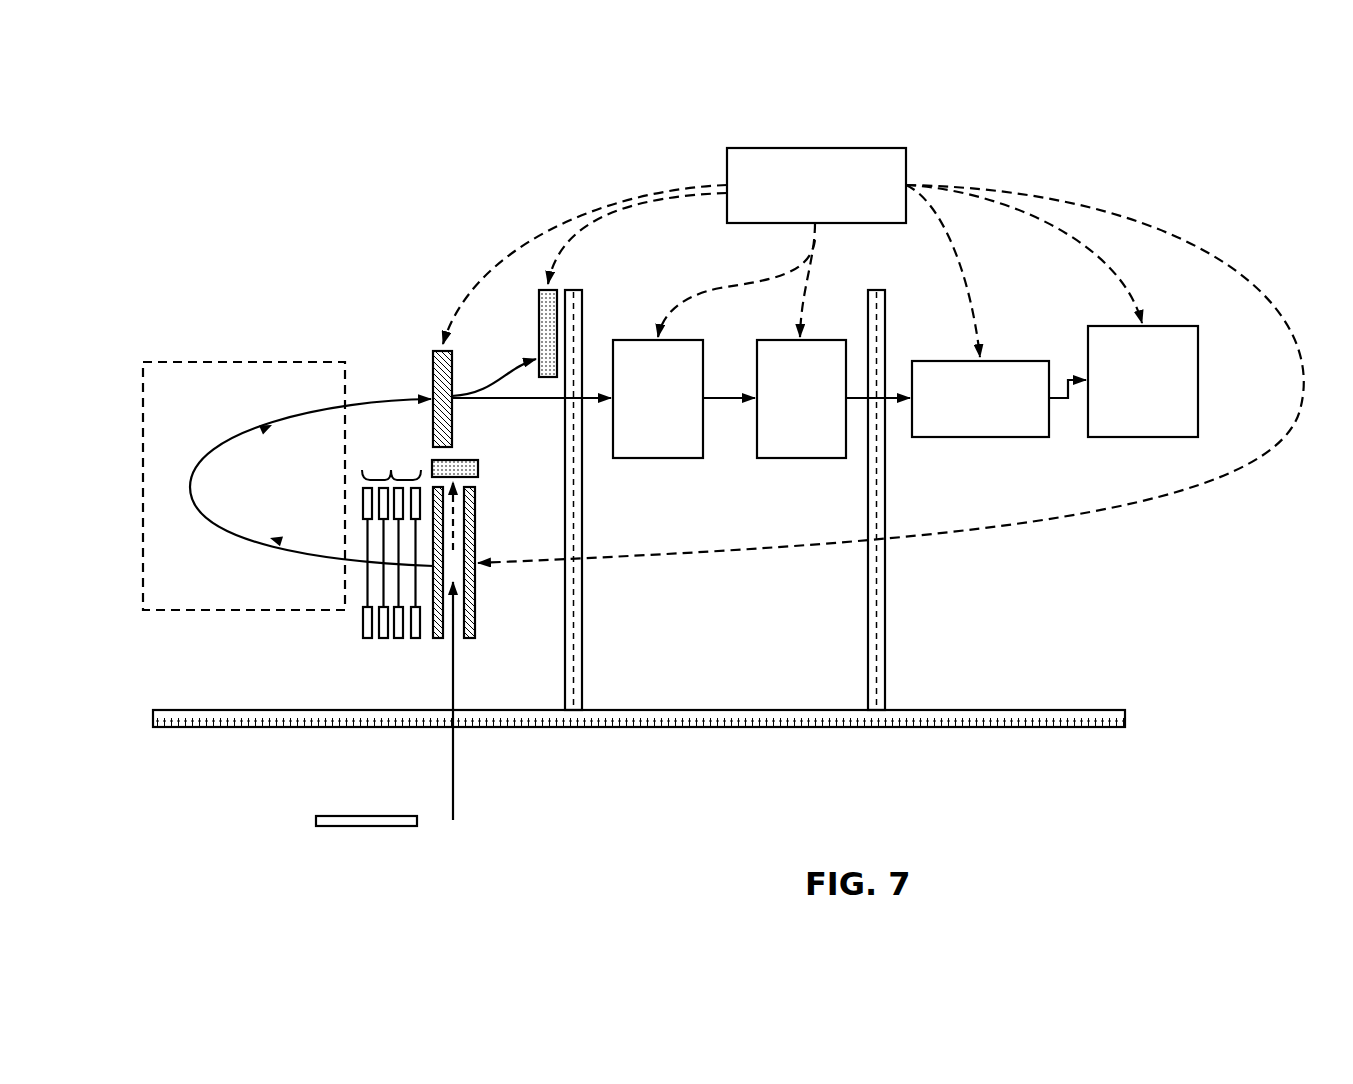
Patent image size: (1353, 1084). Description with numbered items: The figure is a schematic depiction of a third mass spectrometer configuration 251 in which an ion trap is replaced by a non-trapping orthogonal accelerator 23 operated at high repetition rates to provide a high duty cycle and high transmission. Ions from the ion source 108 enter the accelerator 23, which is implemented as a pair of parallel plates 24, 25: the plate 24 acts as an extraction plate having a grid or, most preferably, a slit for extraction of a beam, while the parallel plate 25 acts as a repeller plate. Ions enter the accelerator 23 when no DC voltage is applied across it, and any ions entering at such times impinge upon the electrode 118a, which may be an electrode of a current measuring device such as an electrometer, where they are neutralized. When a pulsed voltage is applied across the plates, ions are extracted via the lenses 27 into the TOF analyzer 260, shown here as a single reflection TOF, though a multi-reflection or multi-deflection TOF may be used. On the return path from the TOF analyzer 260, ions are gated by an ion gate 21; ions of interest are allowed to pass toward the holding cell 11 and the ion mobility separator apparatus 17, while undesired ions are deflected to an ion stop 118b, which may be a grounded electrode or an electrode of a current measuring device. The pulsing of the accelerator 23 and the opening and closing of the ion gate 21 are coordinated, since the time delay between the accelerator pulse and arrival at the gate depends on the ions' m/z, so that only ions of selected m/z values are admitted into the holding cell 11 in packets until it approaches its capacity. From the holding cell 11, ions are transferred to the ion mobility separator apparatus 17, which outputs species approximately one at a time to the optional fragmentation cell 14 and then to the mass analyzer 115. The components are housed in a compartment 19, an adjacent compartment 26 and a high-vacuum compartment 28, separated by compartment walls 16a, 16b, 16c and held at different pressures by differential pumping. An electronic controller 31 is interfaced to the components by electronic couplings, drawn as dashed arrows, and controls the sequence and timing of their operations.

The mass spectrometer configuration 251 is at (286, 127).
The TOF analyzer 260 is at (195, 338).
The compartment 19 is at (225, 660).
The compartment 26 is at (752, 637).
The high-vacuum compartment 28 is at (1035, 637).
The compartment wall 16a is at (317, 710).
The compartment wall 16b is at (583, 680).
The compartment wall 16c is at (886, 680).
The ion source 108 is at (340, 815).
The ion gate 21 is at (433, 357).
The ion stop 118b is at (539, 304).
The electrode 118a is at (478, 470).
The lenses 27 is at (389, 466).
The extraction plate 24 is at (437, 638).
The repeller plate 25 is at (470, 638).
The orthogonal accelerator 23 is at (494, 607).
The electronic controller 31 is at (832, 200).
The holding cell 11 is at (673, 414).
The ion mobility separator apparatus 17 is at (816, 414).
The fragmentation cell 14 is at (995, 414).
The mass analyzer 115 is at (1165, 396).